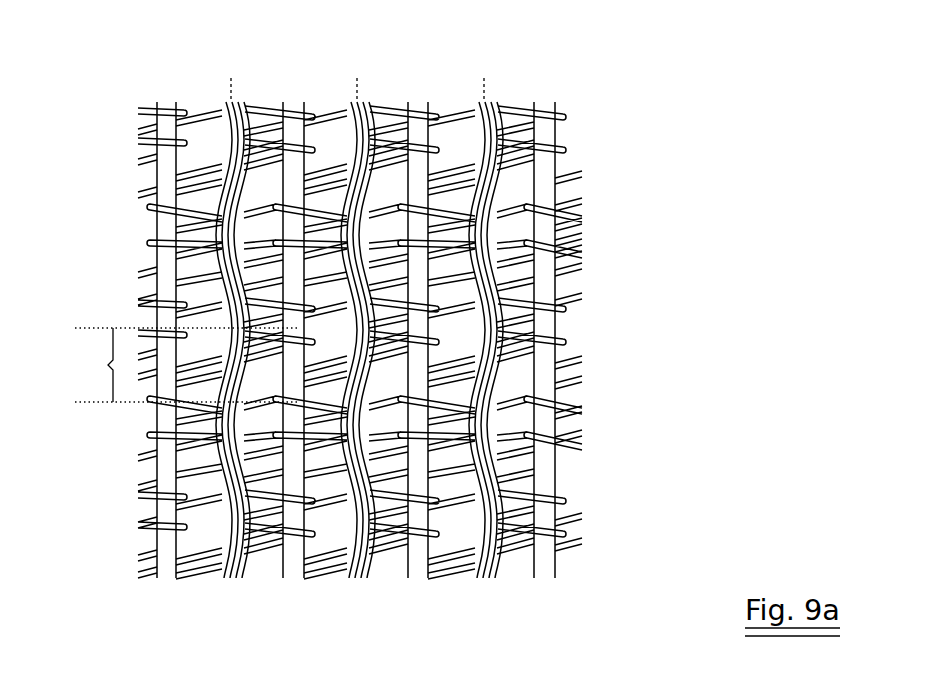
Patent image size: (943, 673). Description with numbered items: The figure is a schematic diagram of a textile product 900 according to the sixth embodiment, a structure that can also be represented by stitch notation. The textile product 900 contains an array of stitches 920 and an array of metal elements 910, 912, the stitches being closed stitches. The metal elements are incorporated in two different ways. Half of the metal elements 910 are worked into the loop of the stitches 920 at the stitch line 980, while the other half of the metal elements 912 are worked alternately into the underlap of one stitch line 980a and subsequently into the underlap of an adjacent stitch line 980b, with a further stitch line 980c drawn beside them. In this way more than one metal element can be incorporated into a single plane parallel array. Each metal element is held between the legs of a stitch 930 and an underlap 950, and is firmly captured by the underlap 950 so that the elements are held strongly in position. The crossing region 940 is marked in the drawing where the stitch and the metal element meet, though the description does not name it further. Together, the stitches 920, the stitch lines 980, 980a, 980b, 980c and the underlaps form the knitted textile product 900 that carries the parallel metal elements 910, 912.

The textile product 900 is at (690, 101).
The metal elements 910 is at (483, 213).
The metal elements 912 is at (547, 110).
The stitches 920 is at (568, 389).
The stitch 930 is at (171, 365).
The twist crossing point 940 is at (200, 214).
The underlap 950 is at (256, 392).
The stitch line 980 is at (231, 582).
The stitch line 980a is at (219, 594).
The adjacent stitch line 980b is at (349, 594).
The third twisted yarn 980c is at (476, 594).